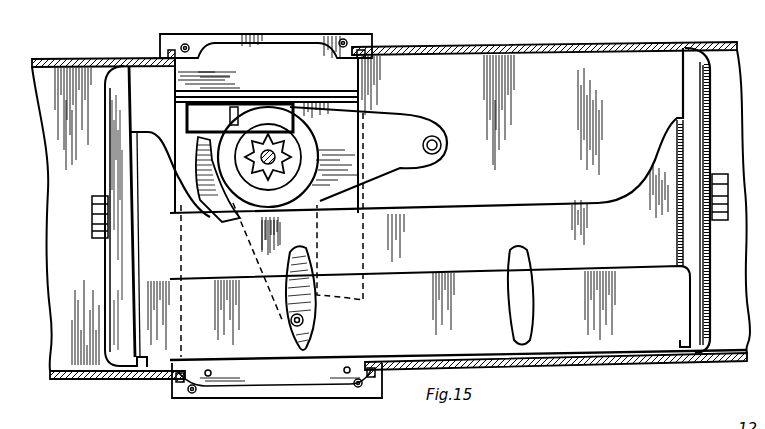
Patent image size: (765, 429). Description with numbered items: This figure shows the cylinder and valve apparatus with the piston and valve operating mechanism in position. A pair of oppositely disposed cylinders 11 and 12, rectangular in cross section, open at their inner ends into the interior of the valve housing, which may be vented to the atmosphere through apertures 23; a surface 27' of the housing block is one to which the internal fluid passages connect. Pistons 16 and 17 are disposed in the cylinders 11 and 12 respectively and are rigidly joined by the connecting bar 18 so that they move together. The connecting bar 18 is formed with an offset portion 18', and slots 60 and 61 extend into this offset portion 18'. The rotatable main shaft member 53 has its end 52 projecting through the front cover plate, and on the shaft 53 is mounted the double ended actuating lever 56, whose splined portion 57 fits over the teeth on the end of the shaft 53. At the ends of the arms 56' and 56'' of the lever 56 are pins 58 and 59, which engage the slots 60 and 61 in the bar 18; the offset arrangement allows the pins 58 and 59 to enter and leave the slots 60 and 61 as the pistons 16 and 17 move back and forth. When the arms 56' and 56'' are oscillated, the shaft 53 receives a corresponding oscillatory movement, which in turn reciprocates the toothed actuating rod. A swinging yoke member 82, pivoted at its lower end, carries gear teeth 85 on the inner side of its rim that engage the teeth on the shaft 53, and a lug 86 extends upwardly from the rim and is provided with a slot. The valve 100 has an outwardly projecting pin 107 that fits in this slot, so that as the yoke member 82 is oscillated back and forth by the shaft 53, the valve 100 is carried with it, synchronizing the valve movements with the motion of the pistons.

The cylinder 11 is at (63, 60).
The cylinder 12 is at (568, 46).
The piston 16 is at (122, 172).
The piston 17 is at (695, 268).
The connecting bar 18 is at (426, 157).
The offset portion 18' is at (458, 337).
The apertures 23 is at (213, 377).
The surface 27' is at (299, 91).
The end of main shaft 52 is at (296, 126).
The main shaft member 53 is at (284, 118).
The double ended actuating lever 56 is at (288, 180).
The arm of lever 56' is at (291, 235).
The arm of lever 56'' is at (382, 147).
The splined portion 57 is at (276, 153).
The pin 58 is at (285, 322).
The pin 59 is at (445, 141).
The slot 60 is at (306, 338).
The slot 61 is at (532, 308).
The swinging yoke member 82 is at (195, 168).
The gear teeth 85 is at (237, 208).
The lug 86 is at (216, 126).
The valve 100 is at (272, 102).
The pin 107 is at (243, 110).